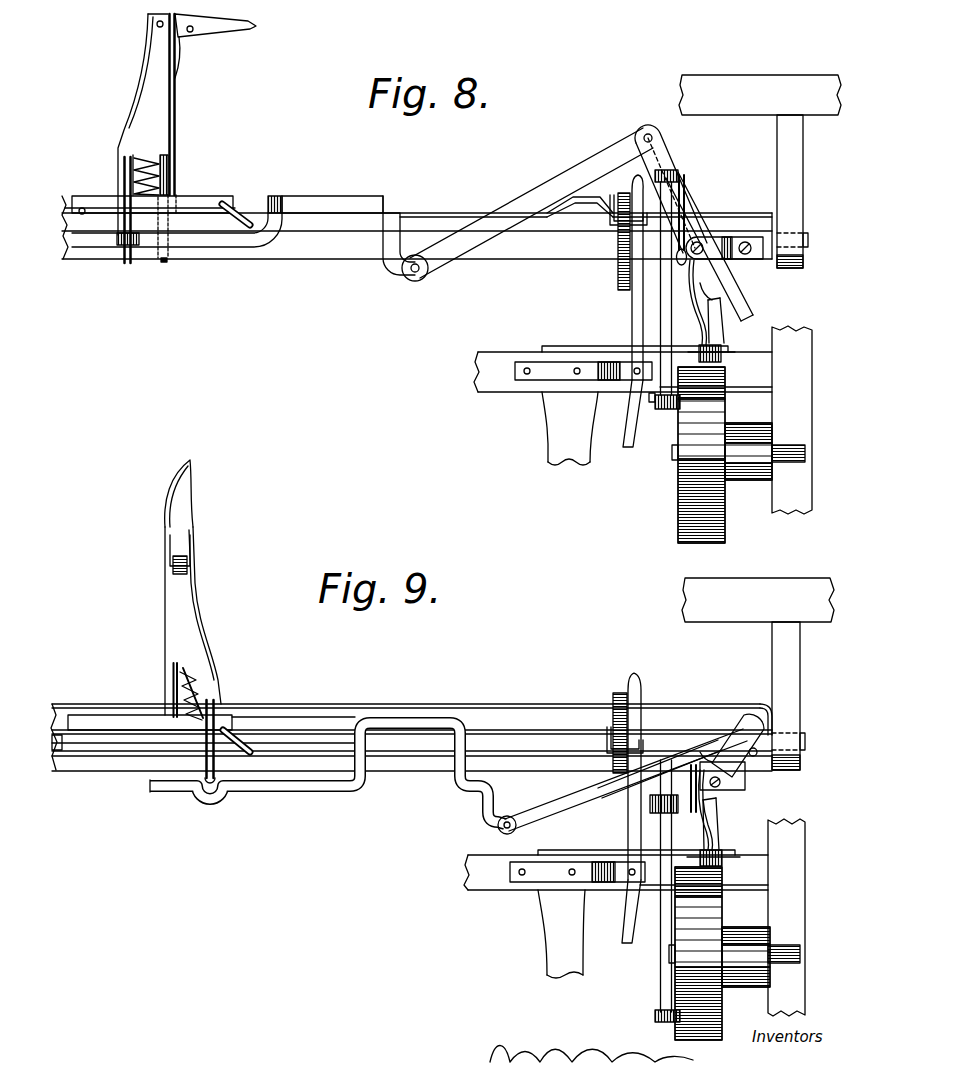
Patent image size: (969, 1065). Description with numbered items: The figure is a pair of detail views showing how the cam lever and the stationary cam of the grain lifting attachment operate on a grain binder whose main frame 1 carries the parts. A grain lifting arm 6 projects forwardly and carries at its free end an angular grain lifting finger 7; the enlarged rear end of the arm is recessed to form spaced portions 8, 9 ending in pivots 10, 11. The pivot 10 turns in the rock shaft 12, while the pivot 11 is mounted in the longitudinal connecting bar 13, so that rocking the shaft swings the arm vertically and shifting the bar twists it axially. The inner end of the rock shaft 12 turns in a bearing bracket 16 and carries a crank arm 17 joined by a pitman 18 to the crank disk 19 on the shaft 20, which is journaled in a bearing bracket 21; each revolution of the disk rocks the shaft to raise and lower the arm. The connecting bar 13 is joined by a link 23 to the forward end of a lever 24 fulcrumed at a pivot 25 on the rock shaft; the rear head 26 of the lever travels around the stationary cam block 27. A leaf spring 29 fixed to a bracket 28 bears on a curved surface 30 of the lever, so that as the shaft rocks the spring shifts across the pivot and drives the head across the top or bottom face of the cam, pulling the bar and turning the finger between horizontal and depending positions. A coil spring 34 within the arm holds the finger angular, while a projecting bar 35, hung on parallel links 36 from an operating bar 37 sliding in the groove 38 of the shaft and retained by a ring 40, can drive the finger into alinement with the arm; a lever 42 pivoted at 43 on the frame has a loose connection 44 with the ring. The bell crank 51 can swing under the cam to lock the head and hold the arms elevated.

In FIG. 8, the main frame 1 is at (786, 87).
In FIG. 9, the main frame 1 is at (762, 586).
In FIG. 8, the grain lifting arm 6 is at (132, 120).
In FIG. 9, the grain lifting arm 6 is at (168, 613).
In FIG. 8, the grain lifting finger 7 is at (224, 27).
In FIG. 9, the grain lifting finger 7 is at (180, 516).
In FIG. 8, the spaced portion 8 is at (176, 172).
In FIG. 9, the spaced portion 8 is at (172, 681).
In FIG. 8, the spaced portion 9 is at (122, 178).
In FIG. 9, the spaced portion 9 is at (214, 717).
In FIG. 8, the pivot 10 is at (166, 262).
In FIG. 8, the pivot 11 is at (122, 262).
In FIG. 8, the rock shaft 12 is at (330, 258).
In FIG. 9, the rock shaft 12 is at (495, 712).
In FIG. 8, the connecting bar 13 is at (230, 242).
In FIG. 9, the connecting bar 13 is at (277, 790).
In FIG. 8, the bearing bracket 16 is at (800, 176).
In FIG. 9, the bearing bracket 16 is at (792, 672).
In FIG. 8, the crank arm 17 is at (688, 205).
In FIG. 9, the crank arm 17 is at (692, 763).
In FIG. 8, the pitman 18 is at (660, 294).
In FIG. 9, the pitman 18 is at (660, 828).
In FIG. 8, the crank disk 19 is at (695, 436).
In FIG. 9, the crank disk 19 is at (690, 937).
In FIG. 8, the shaft 20 is at (788, 450).
In FIG. 9, the shaft 20 is at (785, 953).
In FIG. 8, the bearing bracket 21 is at (748, 473).
In FIG. 9, the bearing bracket 21 is at (747, 982).
In FIG. 8, the link 23 is at (531, 195).
In FIG. 9, the link 23 is at (560, 808).
In FIG. 8, the lever 24 is at (660, 158).
In FIG. 9, the lever 24 is at (740, 774).
In FIG. 8, the pivot 25 is at (701, 244).
In FIG. 9, the pivot 25 is at (717, 785).
In FIG. 8, the head 26 is at (744, 310).
In FIG. 9, the head 26 is at (668, 770).
In FIG. 8, the cam block 27 is at (720, 332).
In FIG. 9, the cam block 27 is at (714, 839).
In FIG. 8, the bracket 28 is at (722, 358).
In FIG. 9, the bracket 28 is at (740, 860).
In FIG. 8, the leaf spring 29 is at (712, 290).
In FIG. 9, the leaf spring 29 is at (708, 808).
In FIG. 8, the curved surface 30 is at (703, 290).
In FIG. 9, the curved surface 30 is at (704, 756).
In FIG. 8, the coil spring 34 is at (154, 158).
In FIG. 9, the coil spring 34 is at (193, 688).
In FIG. 8, the projecting bar 35 is at (205, 200).
In FIG. 9, the projecting bar 35 is at (132, 681).
In FIG. 8, the parallel link 36 is at (242, 210).
In FIG. 9, the parallel link 36 is at (243, 743).
In FIG. 8, the operating bar 37 is at (334, 208).
In FIG. 9, the operating bar 37 is at (118, 752).
In FIG. 8, the groove 38 is at (431, 216).
In FIG. 9, the groove 38 is at (531, 736).
In FIG. 8, the ring 40 is at (622, 247).
In FIG. 8, the lever 42 is at (635, 412).
In FIG. 9, the lever 42 is at (630, 913).
In FIG. 8, the pivot 43 is at (630, 360).
In FIG. 9, the pivot 43 is at (630, 874).
In FIG. 8, the loose connection 44 is at (627, 207).
In FIG. 9, the loose connection 44 is at (638, 735).
In FIG. 8, the bell crank 51 is at (549, 456).
In FIG. 9, the bell crank 51 is at (548, 953).